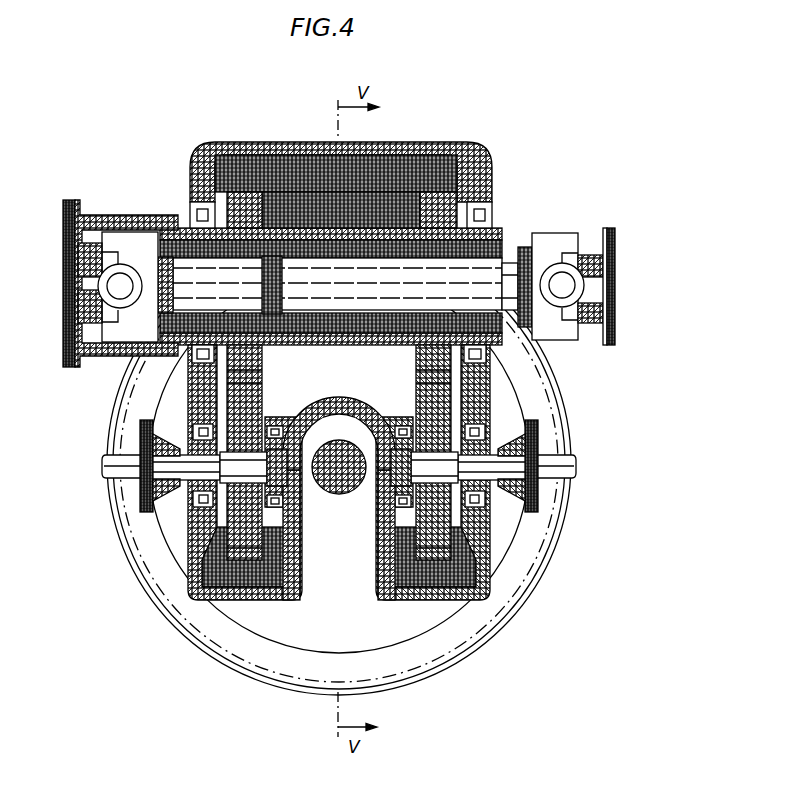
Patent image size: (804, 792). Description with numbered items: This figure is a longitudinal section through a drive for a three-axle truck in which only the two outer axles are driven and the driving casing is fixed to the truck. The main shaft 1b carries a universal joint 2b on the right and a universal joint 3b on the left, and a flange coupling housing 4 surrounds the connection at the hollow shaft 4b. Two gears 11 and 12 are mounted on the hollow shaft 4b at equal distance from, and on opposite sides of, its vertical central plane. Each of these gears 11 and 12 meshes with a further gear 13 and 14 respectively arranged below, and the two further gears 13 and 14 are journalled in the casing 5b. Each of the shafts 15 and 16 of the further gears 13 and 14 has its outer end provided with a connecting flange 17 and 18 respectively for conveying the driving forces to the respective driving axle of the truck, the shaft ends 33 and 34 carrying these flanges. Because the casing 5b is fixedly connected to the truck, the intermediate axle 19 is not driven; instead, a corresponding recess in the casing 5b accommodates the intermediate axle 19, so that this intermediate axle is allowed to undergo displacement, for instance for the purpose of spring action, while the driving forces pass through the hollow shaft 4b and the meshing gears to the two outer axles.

The main shaft 1b is at (328, 270).
The universal joint (right) 2b is at (600, 268).
The universal joint (left) 3b is at (87, 275).
The flange coupling housing 4 is at (94, 350).
The hollow shaft 4b is at (295, 343).
The casing 5b is at (493, 176).
The gear 11 is at (258, 208).
The gear 12 is at (426, 208).
The further gear 13 is at (242, 538).
The further gear 14 is at (430, 538).
The shaft 15 is at (197, 473).
The shaft 16 is at (490, 483).
The connecting flange 17 is at (140, 433).
The connecting flange 18 is at (537, 440).
The intermediate axle 19 is at (341, 488).
The shaft end 33 is at (108, 477).
The shaft end 34 is at (570, 478).